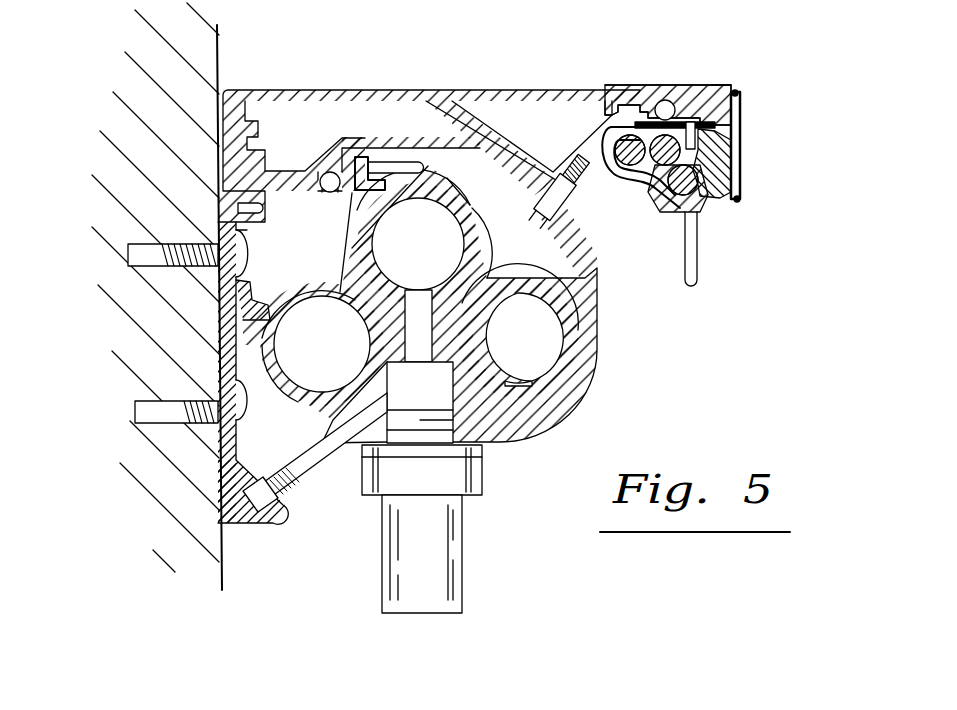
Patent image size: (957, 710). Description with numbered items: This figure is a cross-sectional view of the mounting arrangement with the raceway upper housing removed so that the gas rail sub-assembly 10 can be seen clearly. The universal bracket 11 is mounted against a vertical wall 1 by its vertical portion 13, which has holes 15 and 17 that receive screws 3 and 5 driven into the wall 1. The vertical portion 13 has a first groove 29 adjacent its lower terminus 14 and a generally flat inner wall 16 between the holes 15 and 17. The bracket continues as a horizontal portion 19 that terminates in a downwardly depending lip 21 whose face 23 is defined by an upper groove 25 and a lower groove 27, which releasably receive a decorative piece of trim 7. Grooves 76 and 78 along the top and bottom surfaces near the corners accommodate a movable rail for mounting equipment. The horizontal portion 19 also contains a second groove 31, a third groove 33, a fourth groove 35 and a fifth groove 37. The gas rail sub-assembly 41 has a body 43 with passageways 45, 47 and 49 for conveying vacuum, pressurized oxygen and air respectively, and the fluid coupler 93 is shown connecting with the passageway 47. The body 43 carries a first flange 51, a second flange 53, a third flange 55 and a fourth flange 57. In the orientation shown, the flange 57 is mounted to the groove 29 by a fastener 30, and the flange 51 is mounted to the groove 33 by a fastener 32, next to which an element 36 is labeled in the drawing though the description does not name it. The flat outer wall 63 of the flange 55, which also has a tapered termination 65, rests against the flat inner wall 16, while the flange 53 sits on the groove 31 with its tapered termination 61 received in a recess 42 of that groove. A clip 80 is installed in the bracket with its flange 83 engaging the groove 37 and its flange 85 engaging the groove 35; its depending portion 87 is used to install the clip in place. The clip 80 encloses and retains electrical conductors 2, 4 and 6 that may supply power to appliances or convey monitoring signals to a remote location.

The wall 1 is at (128, 158).
The electrical conductor 2 is at (683, 193).
The screw 3 is at (135, 410).
The electrical conductor 4 is at (668, 178).
The screw 5 is at (150, 255).
The electrical conductor 6 is at (612, 158).
The decorative piece of trim 7 is at (743, 153).
The gas rail sub-assembly 10 is at (682, 372).
The universal bracket 11 is at (322, 85).
The vertical portion 13 is at (213, 325).
The lower terminus 14 is at (233, 527).
The hole 15 is at (220, 427).
The flat inner wall 16 is at (238, 370).
The hole 17 is at (213, 237).
The horizontal portion 19 is at (560, 90).
The downwardly depending lip 21 is at (737, 147).
The face 23 is at (740, 173).
The upper groove 25 is at (745, 100).
The lower groove 27 is at (713, 187).
The first groove 29 is at (237, 523).
The fastener 30 is at (285, 498).
The second groove 31 is at (370, 173).
The fastener 32 is at (570, 206).
The third groove 33 is at (553, 141).
The fourth groove 35 is at (613, 86).
The clamp nut 36 is at (535, 187).
The fifth groove 37 is at (737, 123).
The gas rail sub-assembly 41 is at (335, 246).
The recess 42 is at (372, 188).
The body 43 is at (567, 404).
The passageway 45 is at (341, 363).
The passageway 47 is at (436, 258).
The passageway 49 is at (537, 363).
The first flange 51 is at (545, 217).
The second flange 53 is at (426, 168).
The third flange 55 is at (252, 298).
The fourth flange 57 is at (317, 443).
The tapered termination 61 is at (367, 163).
The flat outer wall 63 is at (227, 317).
The tapered termination 65 is at (246, 288).
The groove 76 is at (718, 90).
The groove 78 is at (717, 203).
The clip 80 is at (696, 283).
The flange 83 is at (735, 118).
The flange 85 is at (680, 97).
The depending portion 87 is at (698, 258).
The fluid coupler 93 is at (458, 551).